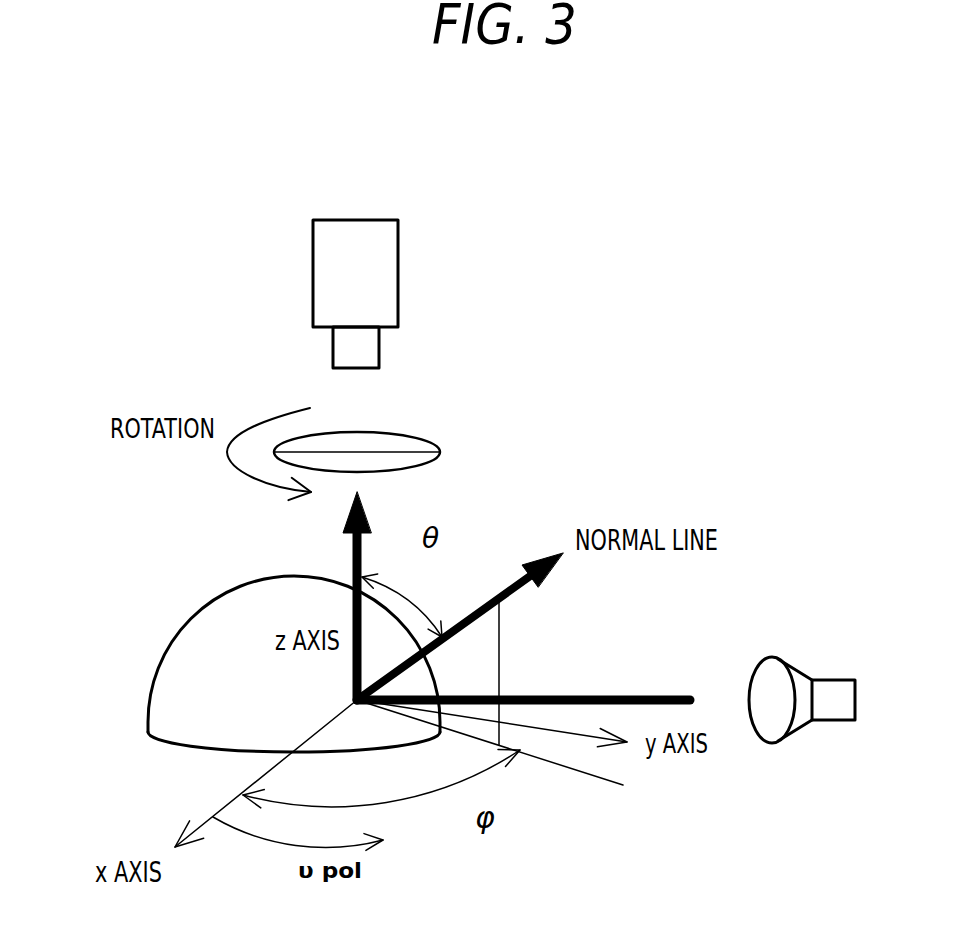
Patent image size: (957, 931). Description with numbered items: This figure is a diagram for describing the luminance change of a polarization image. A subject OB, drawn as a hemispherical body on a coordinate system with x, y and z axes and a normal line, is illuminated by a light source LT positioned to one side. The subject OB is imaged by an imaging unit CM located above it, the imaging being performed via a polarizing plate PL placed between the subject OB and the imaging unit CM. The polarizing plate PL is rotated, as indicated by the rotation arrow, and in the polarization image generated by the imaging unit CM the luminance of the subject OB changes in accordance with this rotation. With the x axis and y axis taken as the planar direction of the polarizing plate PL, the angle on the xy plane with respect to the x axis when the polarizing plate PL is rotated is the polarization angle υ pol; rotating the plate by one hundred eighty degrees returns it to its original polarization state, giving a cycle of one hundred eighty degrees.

The imaging unit CM is at (400, 218).
The polarizing plate PL is at (397, 432).
The subject OB is at (202, 607).
The light source LT is at (855, 680).